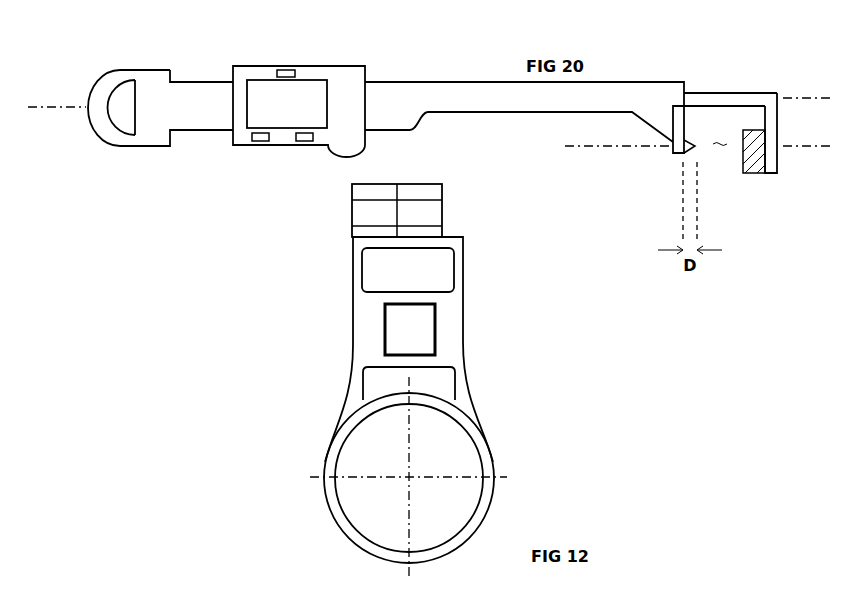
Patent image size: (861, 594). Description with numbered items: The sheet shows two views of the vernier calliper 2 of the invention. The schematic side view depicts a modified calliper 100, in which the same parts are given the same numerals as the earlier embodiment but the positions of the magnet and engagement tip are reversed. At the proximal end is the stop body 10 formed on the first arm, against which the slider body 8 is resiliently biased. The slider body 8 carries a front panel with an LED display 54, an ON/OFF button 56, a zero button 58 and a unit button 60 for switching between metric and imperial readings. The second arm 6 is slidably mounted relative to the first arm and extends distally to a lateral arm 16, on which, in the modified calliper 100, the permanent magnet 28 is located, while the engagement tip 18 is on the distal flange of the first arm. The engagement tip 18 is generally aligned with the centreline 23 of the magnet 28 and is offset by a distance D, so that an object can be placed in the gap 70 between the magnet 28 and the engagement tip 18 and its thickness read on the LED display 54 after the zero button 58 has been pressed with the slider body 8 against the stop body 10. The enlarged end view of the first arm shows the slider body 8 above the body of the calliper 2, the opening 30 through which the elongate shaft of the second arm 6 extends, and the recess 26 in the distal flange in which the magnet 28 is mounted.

In FIG. 20, the vernier calliper 2 is at (463, 98).
In FIG. 12, the vernier calliper 2 is at (497, 282).
In FIG. 20, the second arm 6 is at (725, 92).
In FIG. 20, the slider body 8 is at (325, 65).
In FIG. 12, the slider body 8 is at (444, 208).
In FIG. 20, the stop body 10 is at (157, 133).
In FIG. 20, the lateral arm 16 is at (768, 113).
In FIG. 20, the engagement tip 18 is at (753, 163).
In FIG. 20, the centreline 23 is at (807, 148).
In FIG. 12, the recess 26 is at (465, 442).
In FIG. 12, the permanent magnet 28 is at (465, 467).
In FIG. 12, the opening 30 is at (423, 338).
In FIG. 20, the LED display 54 is at (260, 105).
In FIG. 20, the ON/OFF button 56 is at (259, 142).
In FIG. 20, the zero button 58 is at (305, 142).
In FIG. 20, the unit button 60 is at (286, 71).
In FIG. 20, the gap 70 is at (720, 135).
In FIG. 20, the modified calliper 100 is at (392, 63).